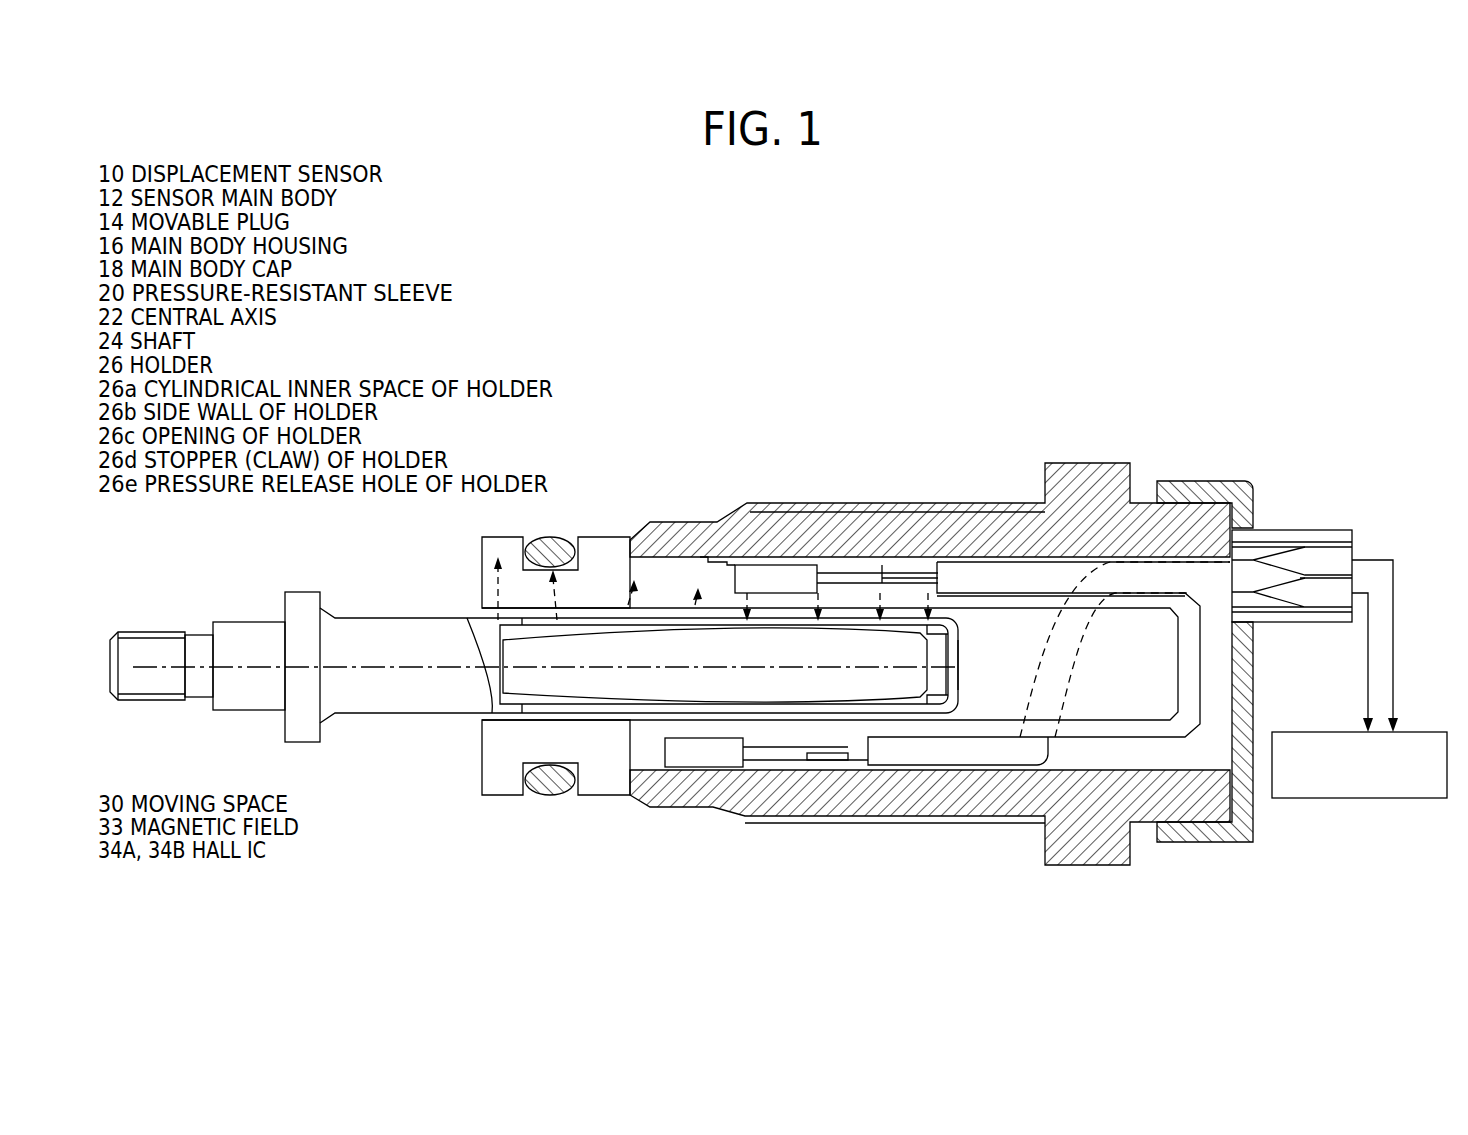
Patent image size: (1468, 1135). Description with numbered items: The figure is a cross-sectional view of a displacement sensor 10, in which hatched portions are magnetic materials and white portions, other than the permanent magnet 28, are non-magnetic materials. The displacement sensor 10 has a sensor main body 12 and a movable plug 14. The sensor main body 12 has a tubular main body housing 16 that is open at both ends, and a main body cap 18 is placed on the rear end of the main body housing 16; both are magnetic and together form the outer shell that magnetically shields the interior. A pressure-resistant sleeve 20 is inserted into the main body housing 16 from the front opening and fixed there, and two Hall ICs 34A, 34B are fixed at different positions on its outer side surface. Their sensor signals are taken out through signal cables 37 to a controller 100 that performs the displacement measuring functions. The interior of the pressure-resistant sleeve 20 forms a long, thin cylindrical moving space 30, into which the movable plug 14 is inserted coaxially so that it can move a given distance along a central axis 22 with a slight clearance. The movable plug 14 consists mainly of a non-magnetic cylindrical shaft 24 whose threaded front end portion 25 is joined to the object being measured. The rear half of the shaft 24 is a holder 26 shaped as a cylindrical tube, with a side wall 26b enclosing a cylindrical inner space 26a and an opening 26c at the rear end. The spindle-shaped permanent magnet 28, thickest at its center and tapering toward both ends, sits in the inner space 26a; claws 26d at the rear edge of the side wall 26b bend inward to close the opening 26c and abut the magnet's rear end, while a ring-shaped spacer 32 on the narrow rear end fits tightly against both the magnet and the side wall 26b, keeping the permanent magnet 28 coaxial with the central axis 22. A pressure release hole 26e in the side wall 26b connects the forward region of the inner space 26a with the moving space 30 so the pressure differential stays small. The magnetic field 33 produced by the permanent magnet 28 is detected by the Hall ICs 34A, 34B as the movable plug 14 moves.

The displacement sensor 10 is at (770, 432).
The sensor main body 12 is at (869, 475).
The movable plug 14 is at (396, 605).
The main body housing 16 is at (930, 522).
The main body cap 18 is at (1196, 481).
The pressure-resistant sleeve 20 is at (605, 537).
The central axis 22 is at (415, 668).
The shaft 24 is at (360, 697).
The front end portion 25 is at (165, 680).
The holder 26 is at (580, 727).
The cylindrical inner space of holder 26a is at (515, 702).
The side wall of holder 26b is at (612, 705).
The opening of holder 26c is at (957, 670).
The claws of holder 26d is at (962, 708).
The pressure release hole 26e is at (510, 700).
The permanent magnet 28 is at (780, 690).
The moving space 30 is at (990, 630).
The spacer 32 is at (950, 632).
The magnetic field 33 is at (498, 620).
The Hall IC 34A is at (765, 575).
The Hall IC 34B is at (700, 755).
The signal cables 37 is at (1293, 560).
The controller 100 is at (1281, 732).